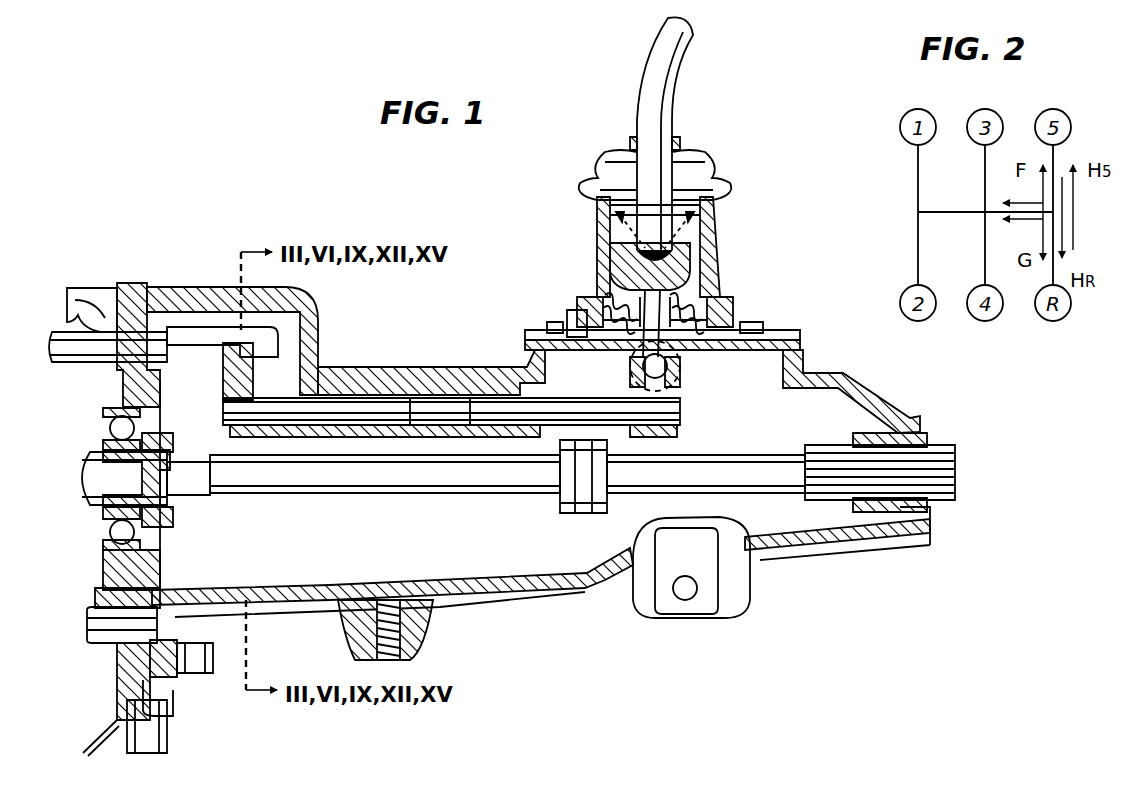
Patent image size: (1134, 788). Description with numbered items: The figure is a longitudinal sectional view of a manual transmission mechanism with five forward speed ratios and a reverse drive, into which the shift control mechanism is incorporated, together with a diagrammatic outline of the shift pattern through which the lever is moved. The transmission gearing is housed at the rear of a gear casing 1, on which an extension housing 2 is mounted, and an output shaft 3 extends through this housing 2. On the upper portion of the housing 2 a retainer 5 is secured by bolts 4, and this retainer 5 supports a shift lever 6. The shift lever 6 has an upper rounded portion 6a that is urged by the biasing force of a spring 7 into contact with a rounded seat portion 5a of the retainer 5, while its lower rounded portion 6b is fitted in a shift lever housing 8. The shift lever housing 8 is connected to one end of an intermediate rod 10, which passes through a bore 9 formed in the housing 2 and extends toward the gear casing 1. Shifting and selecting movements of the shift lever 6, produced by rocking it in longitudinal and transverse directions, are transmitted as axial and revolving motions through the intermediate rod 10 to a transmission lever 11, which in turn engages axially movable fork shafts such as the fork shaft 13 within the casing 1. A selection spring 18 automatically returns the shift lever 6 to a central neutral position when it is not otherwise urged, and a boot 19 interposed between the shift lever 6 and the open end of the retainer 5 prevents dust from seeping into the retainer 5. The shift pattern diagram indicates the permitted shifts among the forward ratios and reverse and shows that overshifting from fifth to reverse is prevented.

The gear casing 1 is at (80, 290).
The extension housing 2 is at (415, 375).
The output shaft 3 is at (432, 495).
The bolts 4 is at (560, 322).
The retainer 5 is at (710, 262).
The rounded seat portion 5a is at (720, 283).
The shift lever 6 is at (667, 107).
The upper rounded portion 6a is at (612, 250).
The lower rounded portion 6b is at (667, 370).
The spring 7 is at (707, 235).
The shift lever housing 8 is at (677, 427).
The bore 9 is at (448, 397).
The intermediate rod 10 is at (390, 400).
The transmission lever 11 is at (226, 374).
The fork shaft 13 is at (66, 362).
The selection spring 18 is at (600, 283).
The boot 19 is at (716, 158).